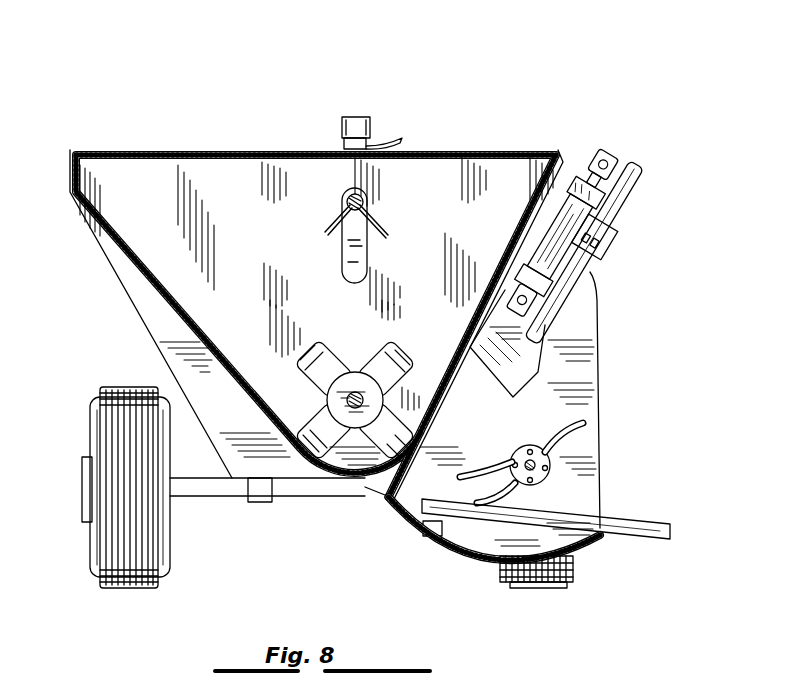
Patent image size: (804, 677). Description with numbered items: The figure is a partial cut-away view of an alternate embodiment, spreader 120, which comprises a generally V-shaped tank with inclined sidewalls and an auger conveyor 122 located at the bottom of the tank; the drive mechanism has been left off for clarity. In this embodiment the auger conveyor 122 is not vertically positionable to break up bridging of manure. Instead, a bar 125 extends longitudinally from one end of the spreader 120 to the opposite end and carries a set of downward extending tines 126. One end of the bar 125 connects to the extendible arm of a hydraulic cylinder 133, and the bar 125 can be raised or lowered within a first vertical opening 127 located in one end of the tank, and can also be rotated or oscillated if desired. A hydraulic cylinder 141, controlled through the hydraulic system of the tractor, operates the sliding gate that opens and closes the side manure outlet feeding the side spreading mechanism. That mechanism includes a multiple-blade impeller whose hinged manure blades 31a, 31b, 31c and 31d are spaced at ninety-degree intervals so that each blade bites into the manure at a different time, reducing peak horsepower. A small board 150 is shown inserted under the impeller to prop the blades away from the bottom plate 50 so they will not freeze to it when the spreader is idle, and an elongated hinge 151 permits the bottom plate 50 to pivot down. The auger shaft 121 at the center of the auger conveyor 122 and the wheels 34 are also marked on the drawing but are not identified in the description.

The spreader 120 is at (512, 152).
The hydraulic cylinder 133 is at (372, 118).
The bar 125 is at (365, 192).
The tines 126 is at (330, 222).
The first vertical opening 127 is at (368, 262).
The hydraulic cylinder 141 is at (597, 283).
The agitator shaft 121 is at (356, 392).
The auger conveyor 122 is at (392, 352).
The blade 31a is at (474, 472).
The blade 31b is at (584, 423).
The blade 31c is at (505, 506).
The blade 31d is at (490, 507).
The small board 150 is at (670, 533).
The elongated hinge 151 is at (432, 537).
The bottom plate 50 is at (478, 550).
The wheel 34 is at (113, 590).